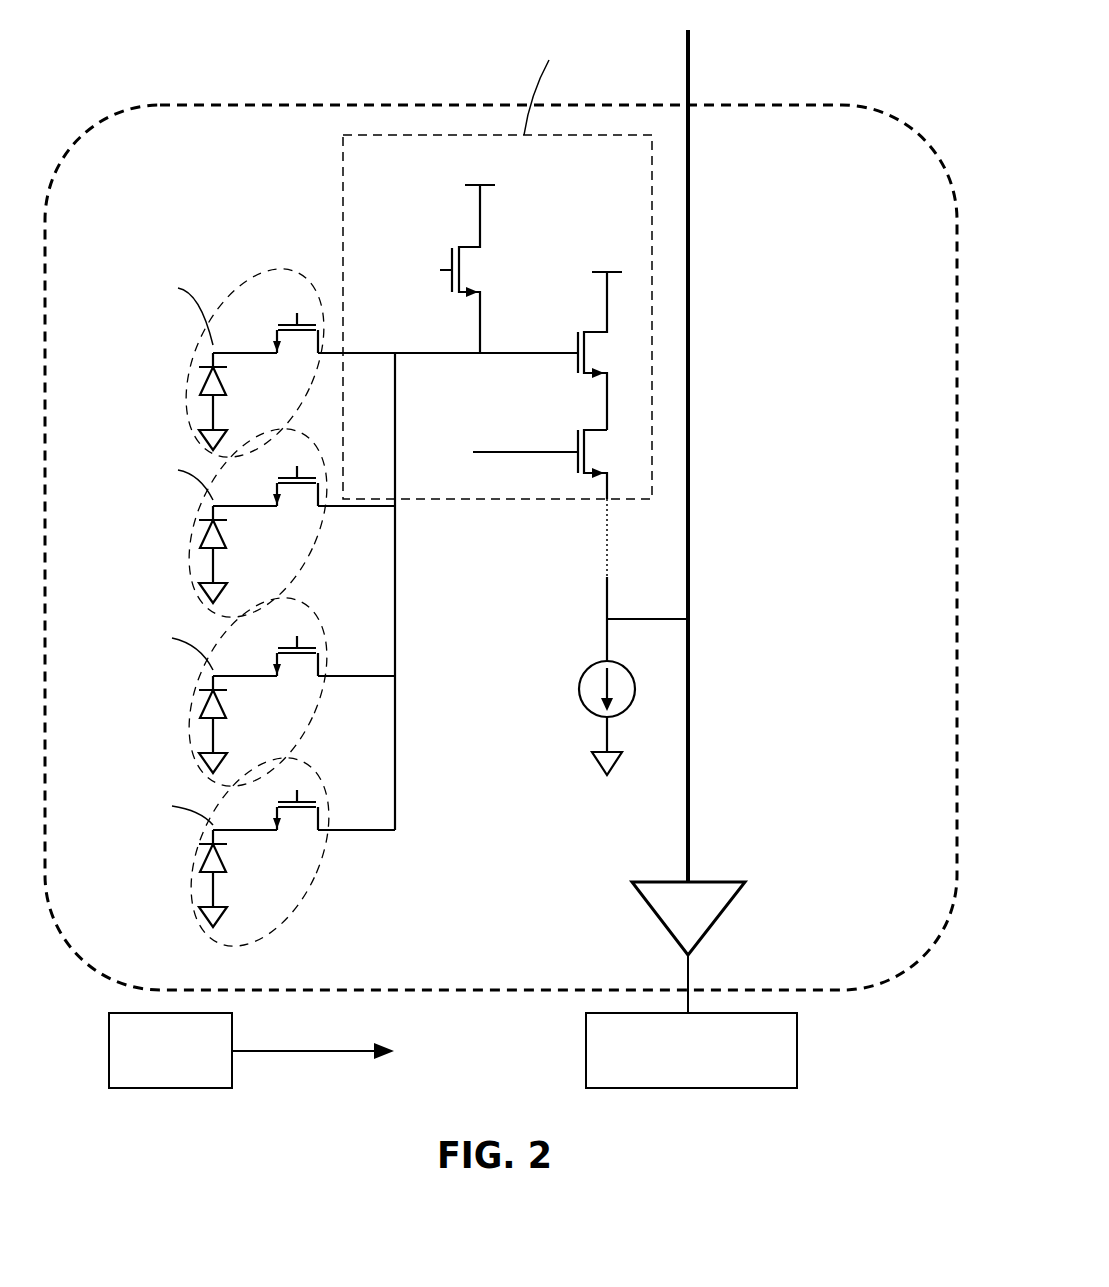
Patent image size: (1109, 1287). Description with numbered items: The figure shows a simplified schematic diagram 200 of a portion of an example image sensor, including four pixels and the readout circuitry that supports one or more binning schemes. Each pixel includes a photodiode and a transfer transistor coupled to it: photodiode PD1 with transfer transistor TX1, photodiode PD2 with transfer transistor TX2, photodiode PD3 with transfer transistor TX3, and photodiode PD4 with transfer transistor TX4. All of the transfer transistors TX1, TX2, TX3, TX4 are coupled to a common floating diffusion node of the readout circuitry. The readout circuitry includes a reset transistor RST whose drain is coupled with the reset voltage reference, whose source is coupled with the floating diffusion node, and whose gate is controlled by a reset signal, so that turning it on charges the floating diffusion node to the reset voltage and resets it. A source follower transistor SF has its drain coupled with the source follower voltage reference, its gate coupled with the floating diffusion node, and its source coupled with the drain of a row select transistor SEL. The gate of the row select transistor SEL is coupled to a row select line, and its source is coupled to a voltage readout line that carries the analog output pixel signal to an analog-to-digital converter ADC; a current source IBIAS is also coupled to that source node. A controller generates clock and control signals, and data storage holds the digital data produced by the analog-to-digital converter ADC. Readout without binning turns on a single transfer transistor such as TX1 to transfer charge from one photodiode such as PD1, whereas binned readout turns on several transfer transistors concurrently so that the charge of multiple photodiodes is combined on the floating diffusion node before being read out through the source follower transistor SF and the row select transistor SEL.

The schematic diagram 200 is at (819, 38).
The transfer transistor TX1 is at (295, 319).
The transfer transistor TX2 is at (295, 473).
The transfer transistor TX3 is at (295, 640).
The transfer transistor TX4 is at (295, 795).
The photodiode PD1 is at (183, 401).
The photodiode PD2 is at (182, 554).
The photodiode PD3 is at (183, 724).
The photodiode PD4 is at (184, 878).
The reset transistor RST is at (447, 269).
The source follower transistor SF is at (601, 351).
The row select transistor SEL is at (540, 461).
The current source IBIAS is at (571, 716).
The analog-to-digital converter ADC is at (688, 918).